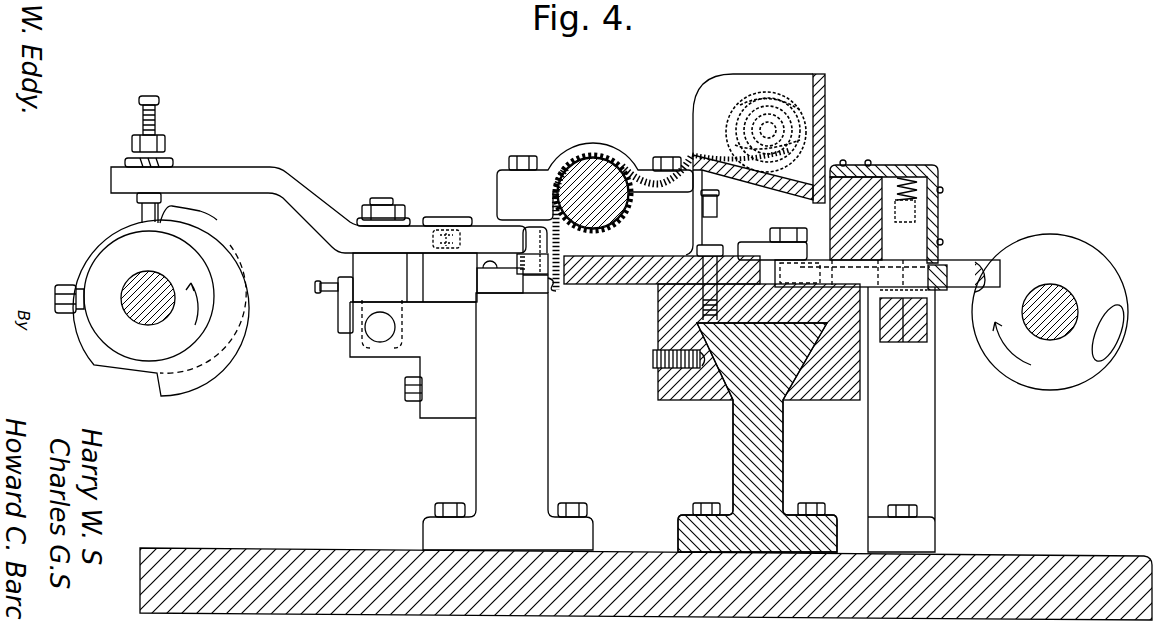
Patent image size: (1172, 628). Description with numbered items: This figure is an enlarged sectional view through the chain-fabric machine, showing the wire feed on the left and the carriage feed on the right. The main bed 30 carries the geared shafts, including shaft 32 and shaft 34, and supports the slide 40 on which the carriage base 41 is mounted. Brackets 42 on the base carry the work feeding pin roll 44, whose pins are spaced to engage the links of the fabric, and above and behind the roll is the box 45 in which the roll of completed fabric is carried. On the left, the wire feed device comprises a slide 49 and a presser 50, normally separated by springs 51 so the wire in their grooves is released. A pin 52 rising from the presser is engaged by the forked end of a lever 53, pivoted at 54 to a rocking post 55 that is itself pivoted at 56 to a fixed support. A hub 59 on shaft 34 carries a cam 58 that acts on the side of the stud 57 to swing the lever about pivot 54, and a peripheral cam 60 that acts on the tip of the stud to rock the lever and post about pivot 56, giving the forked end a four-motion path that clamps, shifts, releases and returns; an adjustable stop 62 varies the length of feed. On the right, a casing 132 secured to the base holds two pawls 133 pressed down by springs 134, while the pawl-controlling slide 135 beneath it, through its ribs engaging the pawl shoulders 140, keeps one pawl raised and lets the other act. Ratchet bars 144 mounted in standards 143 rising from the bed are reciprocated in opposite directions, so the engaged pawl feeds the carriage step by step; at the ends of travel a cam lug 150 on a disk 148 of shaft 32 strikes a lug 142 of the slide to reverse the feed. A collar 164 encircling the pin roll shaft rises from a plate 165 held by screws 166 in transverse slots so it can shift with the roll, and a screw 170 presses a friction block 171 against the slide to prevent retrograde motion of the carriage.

The main bed 30 is at (1038, 575).
The shaft 32 is at (1050, 318).
The shaft 34 is at (165, 283).
The slide 40 is at (747, 452).
The carriage base 41 is at (672, 305).
The brackets 42 is at (523, 157).
The work feeding pin roll 44 is at (617, 157).
The box 45 is at (828, 102).
The slide 49 is at (517, 285).
The presser 50 is at (568, 295).
The springs 51 is at (523, 277).
The pin 52 is at (542, 288).
The lever 53 is at (245, 180).
The pivot 54 is at (382, 200).
The rocking post 55 is at (370, 273).
The pivot 56 is at (380, 327).
The stud 57 is at (140, 208).
The cam 58 is at (233, 328).
The hub 59 is at (140, 364).
The peripheral cam 60 is at (170, 212).
The adjustable stop 62 is at (450, 228).
The pawl casing 132 is at (840, 268).
The pawls 133 is at (907, 242).
The springs 134 is at (922, 170).
The pawl-controlling slide 135 is at (940, 188).
The shoulders 140 is at (897, 263).
The lug 142 is at (1000, 268).
The standards 143 is at (915, 450).
The ratchet bar 144 is at (915, 333).
The disk 148 is at (1097, 275).
The cam lug 150 is at (1102, 343).
The collar 164 is at (580, 157).
The plate 165 is at (658, 263).
The screws 166 is at (710, 247).
The screw 170 is at (665, 360).
The friction block 171 is at (708, 372).